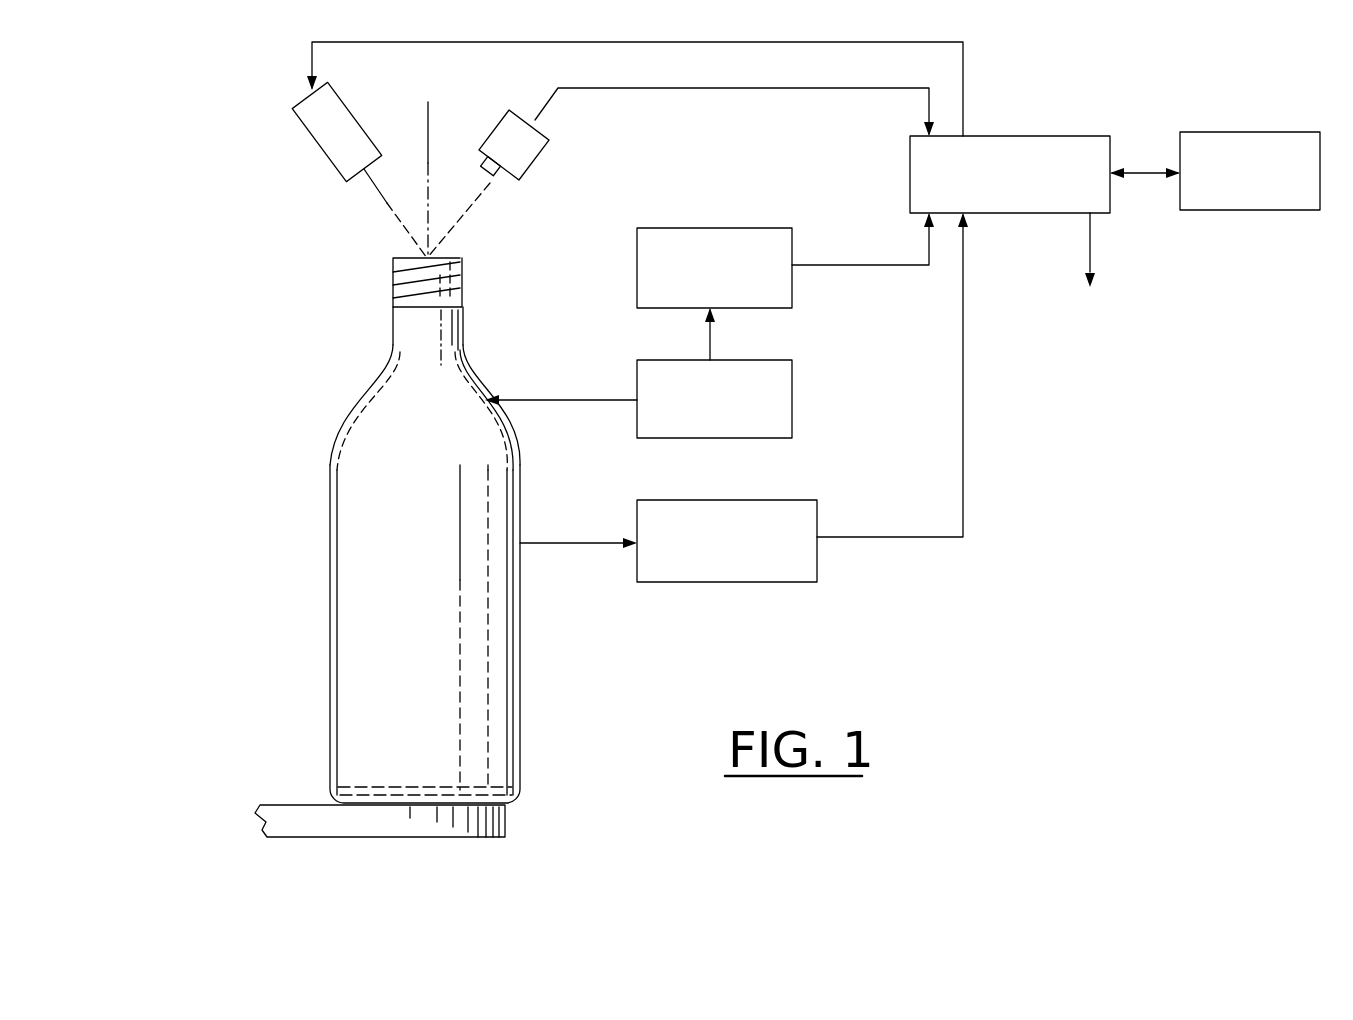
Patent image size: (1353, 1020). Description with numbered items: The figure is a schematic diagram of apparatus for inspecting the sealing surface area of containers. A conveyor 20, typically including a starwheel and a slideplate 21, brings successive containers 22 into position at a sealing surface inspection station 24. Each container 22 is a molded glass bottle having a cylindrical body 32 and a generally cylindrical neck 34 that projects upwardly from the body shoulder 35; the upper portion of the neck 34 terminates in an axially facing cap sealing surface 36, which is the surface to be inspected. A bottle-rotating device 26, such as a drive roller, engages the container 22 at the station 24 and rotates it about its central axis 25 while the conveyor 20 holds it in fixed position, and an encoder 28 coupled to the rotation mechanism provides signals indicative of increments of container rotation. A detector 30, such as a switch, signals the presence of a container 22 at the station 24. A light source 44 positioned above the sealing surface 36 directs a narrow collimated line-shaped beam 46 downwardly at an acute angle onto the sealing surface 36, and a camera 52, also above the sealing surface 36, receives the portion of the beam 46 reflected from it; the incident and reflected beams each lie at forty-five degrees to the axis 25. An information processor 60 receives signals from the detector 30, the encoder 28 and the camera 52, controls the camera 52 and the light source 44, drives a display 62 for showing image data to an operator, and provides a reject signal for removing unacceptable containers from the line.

The conveyor 20 is at (313, 840).
The slideplate 21 is at (390, 836).
The container 22 is at (431, 530).
The sealing surface inspection station 24 is at (222, 336).
The central axis 25 is at (428, 125).
The bottle-rotating device 26 is at (792, 395).
The encoder 28 is at (730, 228).
The detector 30 is at (817, 560).
The cylindrical body 32 is at (348, 613).
The neck 34 is at (393, 332).
The body shoulder 35 is at (342, 422).
The cap sealing surface 36 is at (397, 257).
The light source 44 is at (327, 153).
The collimated beam 46 is at (387, 203).
The camera 52 is at (552, 126).
The information processor 60 is at (1027, 136).
The display 62 is at (1263, 132).